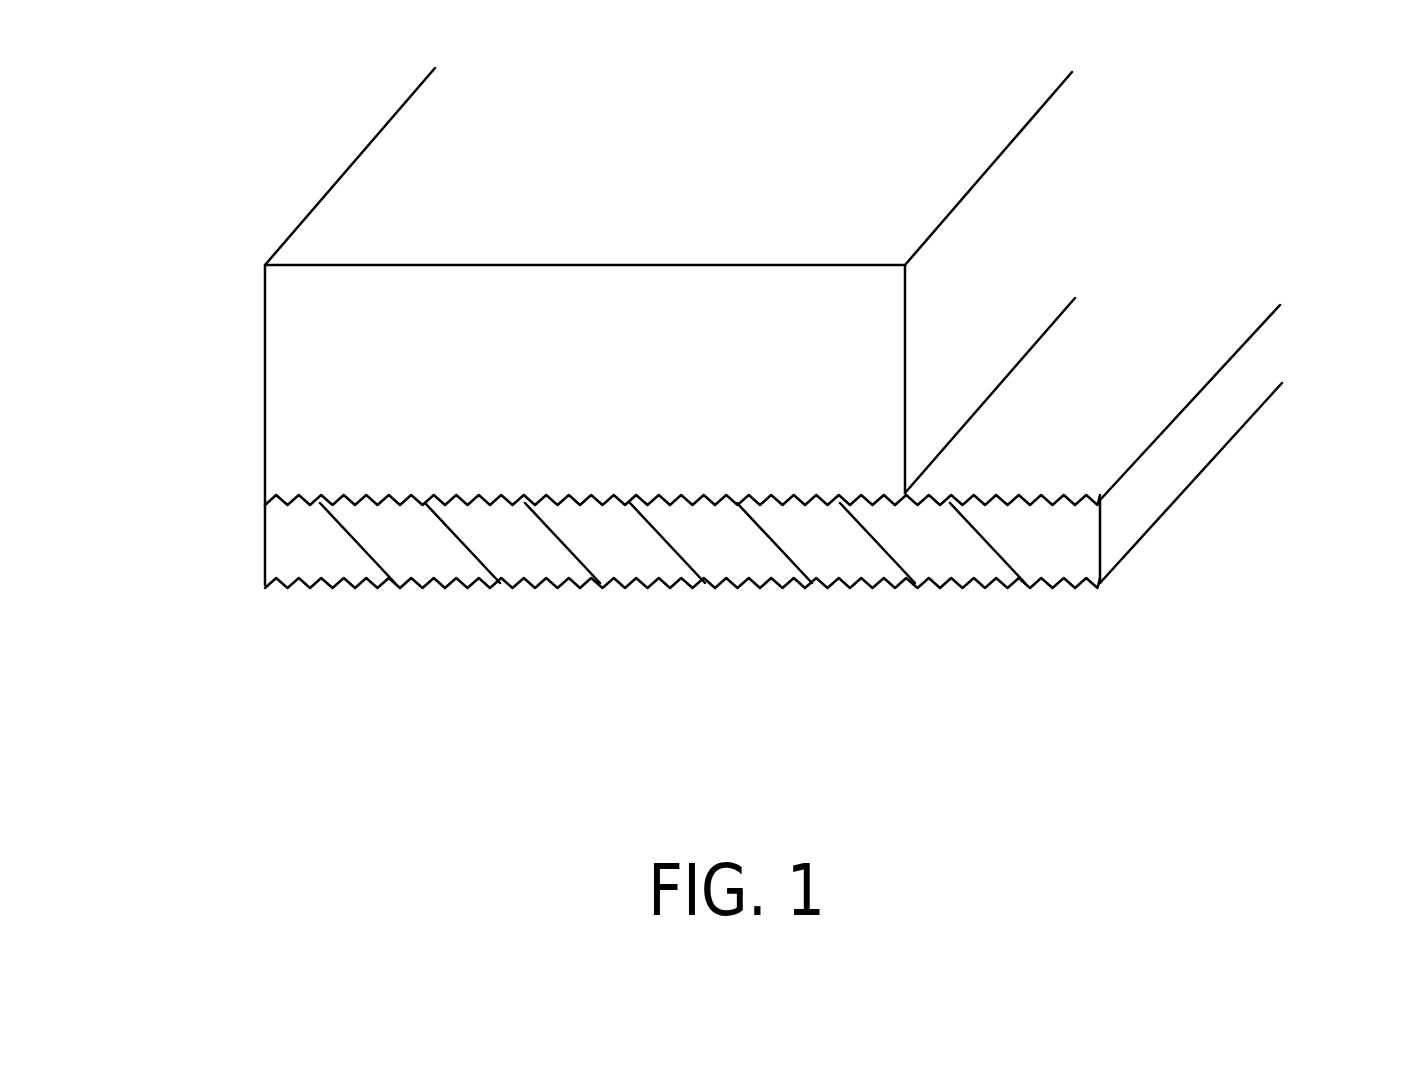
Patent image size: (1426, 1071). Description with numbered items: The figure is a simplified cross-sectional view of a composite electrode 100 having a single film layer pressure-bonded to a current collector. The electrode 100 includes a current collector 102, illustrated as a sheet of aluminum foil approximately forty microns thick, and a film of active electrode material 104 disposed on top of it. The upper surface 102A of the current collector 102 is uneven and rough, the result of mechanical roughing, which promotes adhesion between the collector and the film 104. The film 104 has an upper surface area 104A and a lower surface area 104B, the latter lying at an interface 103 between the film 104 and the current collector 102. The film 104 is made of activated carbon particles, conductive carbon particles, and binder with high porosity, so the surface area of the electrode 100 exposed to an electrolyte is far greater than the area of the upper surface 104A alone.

The composite electrode 100 is at (1195, 96).
The current collector 102 is at (265, 535).
The upper surface of the current collector 102A is at (1025, 493).
The interface 103 is at (265, 493).
The film of active electrode material 104 is at (265, 297).
The upper surface area of the film 104A is at (495, 122).
The lower surface area of the film 104B is at (773, 495).